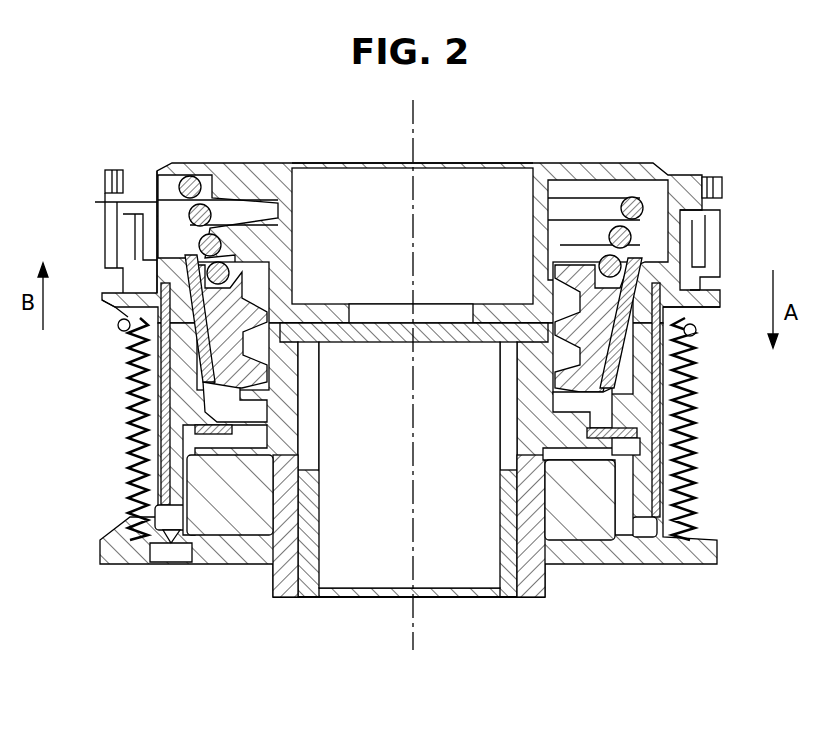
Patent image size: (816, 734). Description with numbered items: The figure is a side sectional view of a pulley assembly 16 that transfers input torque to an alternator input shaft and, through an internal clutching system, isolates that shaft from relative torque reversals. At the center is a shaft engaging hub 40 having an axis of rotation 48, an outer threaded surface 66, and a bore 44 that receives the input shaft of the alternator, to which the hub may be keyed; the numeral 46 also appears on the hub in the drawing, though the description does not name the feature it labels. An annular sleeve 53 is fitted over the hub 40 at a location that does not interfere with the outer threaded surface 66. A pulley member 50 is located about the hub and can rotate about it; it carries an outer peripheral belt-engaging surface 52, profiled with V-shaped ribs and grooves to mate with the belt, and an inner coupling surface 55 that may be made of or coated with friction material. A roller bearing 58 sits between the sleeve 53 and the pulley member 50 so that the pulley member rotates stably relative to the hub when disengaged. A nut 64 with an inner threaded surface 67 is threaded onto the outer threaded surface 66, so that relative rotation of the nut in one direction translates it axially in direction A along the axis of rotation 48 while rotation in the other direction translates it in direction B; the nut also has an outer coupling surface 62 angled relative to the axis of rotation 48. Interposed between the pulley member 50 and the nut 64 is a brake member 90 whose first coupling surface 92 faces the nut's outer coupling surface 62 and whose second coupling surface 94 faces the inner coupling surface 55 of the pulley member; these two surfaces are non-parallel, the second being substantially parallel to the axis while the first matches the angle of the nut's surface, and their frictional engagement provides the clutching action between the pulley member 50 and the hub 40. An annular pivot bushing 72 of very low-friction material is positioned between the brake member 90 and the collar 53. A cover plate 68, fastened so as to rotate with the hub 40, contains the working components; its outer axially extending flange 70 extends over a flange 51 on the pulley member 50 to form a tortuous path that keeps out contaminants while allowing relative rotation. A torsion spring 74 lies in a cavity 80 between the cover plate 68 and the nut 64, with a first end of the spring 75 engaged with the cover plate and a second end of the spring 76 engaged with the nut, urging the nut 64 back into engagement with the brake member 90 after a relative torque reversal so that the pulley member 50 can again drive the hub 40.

The pulley assembly 16 is at (608, 640).
The shaft engaging hub 40 is at (508, 530).
The bore 44 is at (355, 572).
The bore 46 is at (368, 598).
The axis of rotation 48 is at (413, 632).
The pulley member 50 is at (692, 557).
The flange 51 is at (700, 215).
The belt-engaging surface 52 is at (700, 390).
The sleeve 53 is at (530, 590).
The inner coupling surface 55 is at (693, 357).
The roller bearing 58 is at (232, 488).
The outer coupling surface 62 is at (210, 392).
The nut 64 is at (220, 335).
The outer threaded surface 66 is at (575, 240).
The inner threaded surface 67 is at (200, 412).
The cover plate 68 is at (255, 180).
The axially extending flange 70 is at (110, 238).
The pivot bushing 72 is at (640, 433).
The torsion spring 74 is at (95, 202).
The first end of the spring 75 is at (192, 178).
The second end of the spring 76 is at (115, 300).
The cavity 80 is at (654, 210).
The brake member 90 is at (652, 285).
The first coupling surface 92 is at (647, 297).
The second coupling surface 94 is at (697, 312).